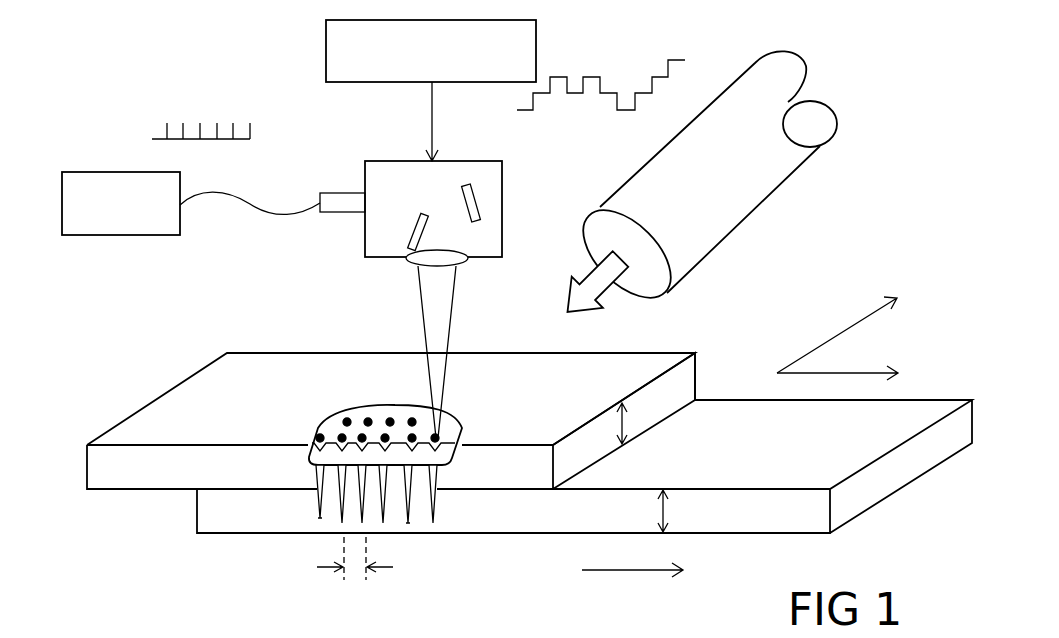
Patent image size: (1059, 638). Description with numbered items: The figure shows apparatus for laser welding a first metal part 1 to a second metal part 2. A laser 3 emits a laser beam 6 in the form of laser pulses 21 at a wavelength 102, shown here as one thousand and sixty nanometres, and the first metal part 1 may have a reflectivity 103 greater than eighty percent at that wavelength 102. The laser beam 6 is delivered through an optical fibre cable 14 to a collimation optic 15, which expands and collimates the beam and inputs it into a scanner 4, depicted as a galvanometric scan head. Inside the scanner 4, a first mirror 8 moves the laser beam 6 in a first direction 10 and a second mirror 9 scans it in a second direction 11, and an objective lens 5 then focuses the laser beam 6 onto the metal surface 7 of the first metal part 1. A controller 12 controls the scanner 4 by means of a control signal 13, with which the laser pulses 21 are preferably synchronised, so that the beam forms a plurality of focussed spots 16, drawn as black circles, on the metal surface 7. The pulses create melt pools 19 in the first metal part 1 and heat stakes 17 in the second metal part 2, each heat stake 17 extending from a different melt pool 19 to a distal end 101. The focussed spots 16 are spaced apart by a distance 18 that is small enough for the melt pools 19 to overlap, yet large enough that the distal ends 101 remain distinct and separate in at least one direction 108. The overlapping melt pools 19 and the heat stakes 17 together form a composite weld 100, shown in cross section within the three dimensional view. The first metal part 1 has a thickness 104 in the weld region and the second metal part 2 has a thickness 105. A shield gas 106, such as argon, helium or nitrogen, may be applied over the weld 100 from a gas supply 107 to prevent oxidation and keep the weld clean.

The first metal part 1 is at (140, 490).
The second metal part 2 is at (238, 537).
The laser 3 is at (122, 236).
The scanner 4 is at (402, 160).
The objective lens 5 is at (410, 263).
The laser beam 6 is at (452, 323).
The metal surface 7 is at (155, 420).
The first mirror 8 is at (474, 193).
The second mirror 9 is at (408, 228).
The first direction 10 is at (865, 372).
The second direction 11 is at (845, 327).
The controller 12 is at (325, 50).
The control signal 13 is at (570, 83).
The optical fibre cable 14 is at (247, 202).
The collimation optic 15 is at (340, 192).
The focussed spots 16 is at (317, 438).
The heat stakes 17 is at (317, 493).
The distance 18 is at (390, 568).
The melt pools 19 is at (353, 438).
The laser pulses 21 is at (200, 123).
The weld 100 is at (460, 432).
The distal end 101 is at (322, 526).
The wavelength 102 is at (153, 288).
The reflectivity 103 is at (648, 368).
The thickness 104 is at (633, 423).
The thickness 105 is at (670, 508).
The shield gas 106 is at (580, 275).
The gas supply 107 is at (760, 205).
The direction 108 is at (638, 573).